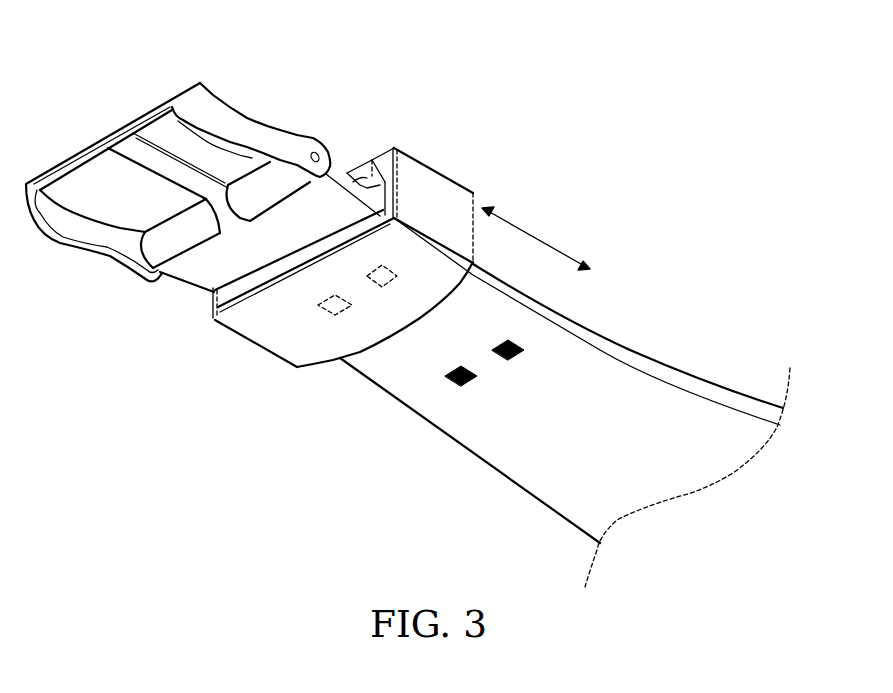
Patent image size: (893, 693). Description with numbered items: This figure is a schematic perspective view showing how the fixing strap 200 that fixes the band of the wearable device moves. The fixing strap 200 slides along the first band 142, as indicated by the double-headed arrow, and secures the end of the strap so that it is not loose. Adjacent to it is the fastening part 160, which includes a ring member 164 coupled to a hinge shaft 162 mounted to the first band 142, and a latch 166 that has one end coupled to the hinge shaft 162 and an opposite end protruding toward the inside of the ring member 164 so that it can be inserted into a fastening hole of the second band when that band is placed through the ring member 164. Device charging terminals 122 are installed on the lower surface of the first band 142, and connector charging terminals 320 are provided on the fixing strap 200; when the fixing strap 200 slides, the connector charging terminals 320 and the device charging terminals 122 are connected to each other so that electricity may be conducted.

The device charging terminals 122 is at (459, 382).
The first band 142 is at (202, 268).
The fastening part 160 is at (395, 82).
The hinge shaft 162 is at (321, 156).
The ring member 164 is at (208, 112).
The latch 166 is at (177, 175).
The fixing strap 200 is at (447, 170).
The connector charging terminals 320 is at (335, 315).